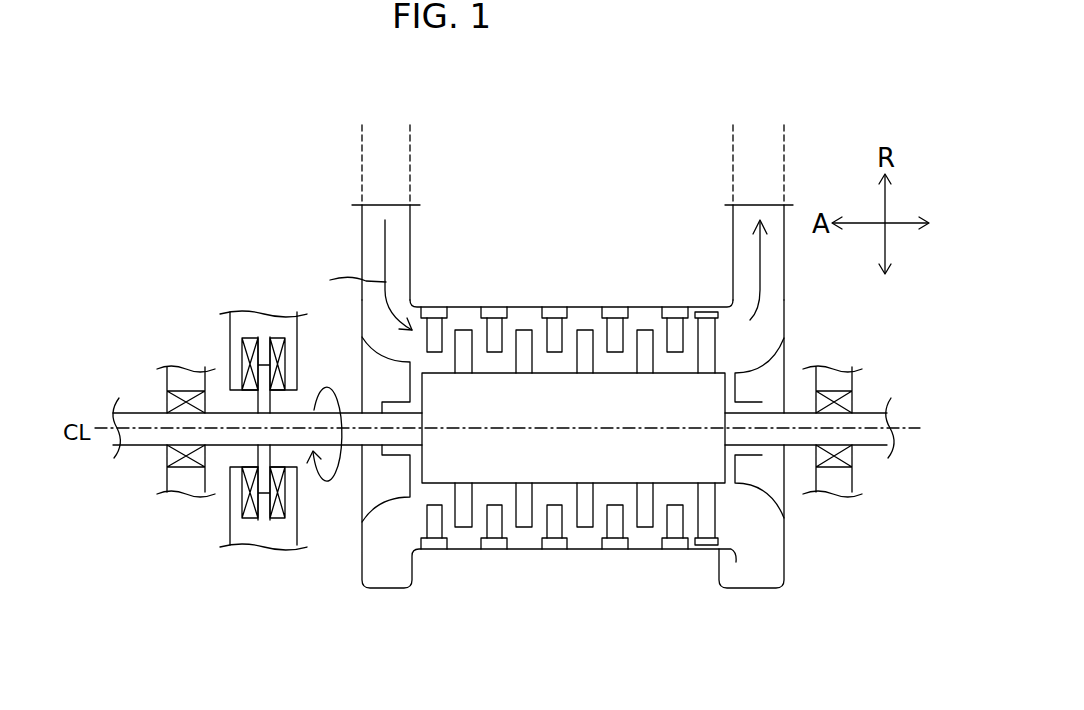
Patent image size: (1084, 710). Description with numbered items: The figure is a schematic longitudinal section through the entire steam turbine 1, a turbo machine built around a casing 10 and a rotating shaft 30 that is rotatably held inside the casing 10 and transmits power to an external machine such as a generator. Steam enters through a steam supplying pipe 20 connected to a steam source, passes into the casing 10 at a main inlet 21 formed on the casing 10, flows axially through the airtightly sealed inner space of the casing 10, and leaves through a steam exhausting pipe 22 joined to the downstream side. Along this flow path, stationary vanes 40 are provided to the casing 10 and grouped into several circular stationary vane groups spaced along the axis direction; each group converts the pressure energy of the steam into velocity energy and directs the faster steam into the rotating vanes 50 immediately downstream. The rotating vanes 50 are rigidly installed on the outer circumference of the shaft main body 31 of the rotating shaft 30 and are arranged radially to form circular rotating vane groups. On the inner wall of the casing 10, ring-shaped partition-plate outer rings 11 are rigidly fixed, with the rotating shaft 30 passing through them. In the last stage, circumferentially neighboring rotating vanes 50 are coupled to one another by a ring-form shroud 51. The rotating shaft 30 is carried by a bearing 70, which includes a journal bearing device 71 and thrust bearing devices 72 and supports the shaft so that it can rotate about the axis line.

The steam turbine 1 is at (754, 601).
The casing 10 is at (385, 590).
The partition-plate outer ring 11 is at (672, 307).
The steam supplying pipe 20 is at (358, 160).
The main inlet 21 is at (369, 232).
The steam exhausting pipe 22 is at (730, 160).
The rotating shaft 30 is at (128, 410).
The shaft main body 31 is at (548, 470).
The stationary vane 40 is at (446, 306).
The rotating vane 50 is at (518, 330).
The shroud 51 is at (707, 296).
The bearing 70 is at (209, 246).
The journal bearing device 71 is at (178, 498).
The thrust bearing device 72 is at (252, 551).